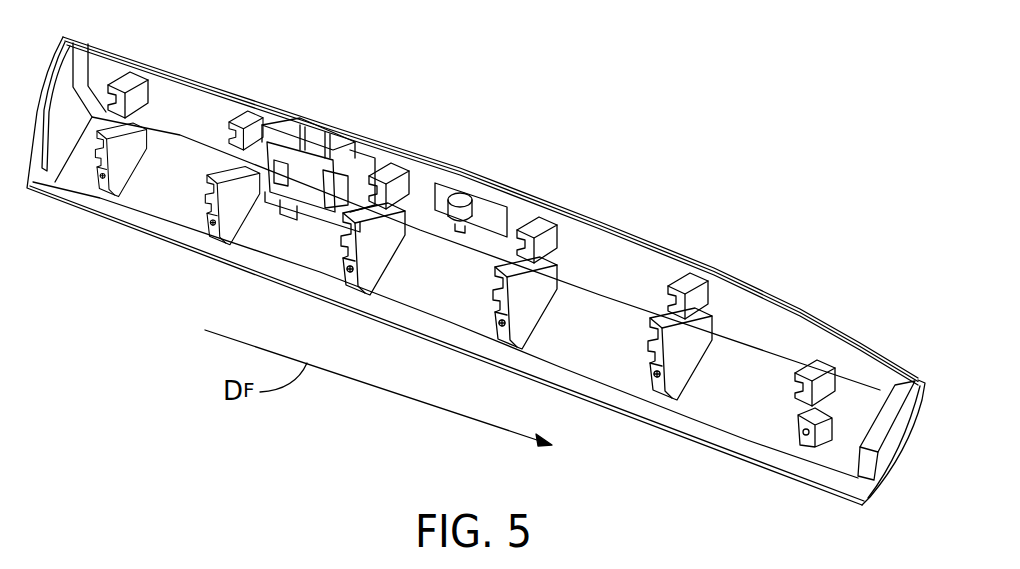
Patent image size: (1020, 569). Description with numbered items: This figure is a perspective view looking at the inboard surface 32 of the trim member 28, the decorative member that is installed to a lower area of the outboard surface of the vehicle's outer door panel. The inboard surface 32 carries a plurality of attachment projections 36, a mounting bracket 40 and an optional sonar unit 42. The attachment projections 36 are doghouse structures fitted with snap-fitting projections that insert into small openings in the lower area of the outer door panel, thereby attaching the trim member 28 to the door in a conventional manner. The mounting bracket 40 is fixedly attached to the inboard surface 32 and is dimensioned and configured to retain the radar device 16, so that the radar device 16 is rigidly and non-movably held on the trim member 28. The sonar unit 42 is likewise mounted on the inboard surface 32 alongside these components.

The radar device 16 is at (307, 183).
The trim member 28 is at (679, 223).
The inboard surface 32 is at (620, 273).
The attachment projections 36 is at (102, 128).
The mounting bracket 40 is at (362, 157).
The sonar unit 42 is at (455, 195).